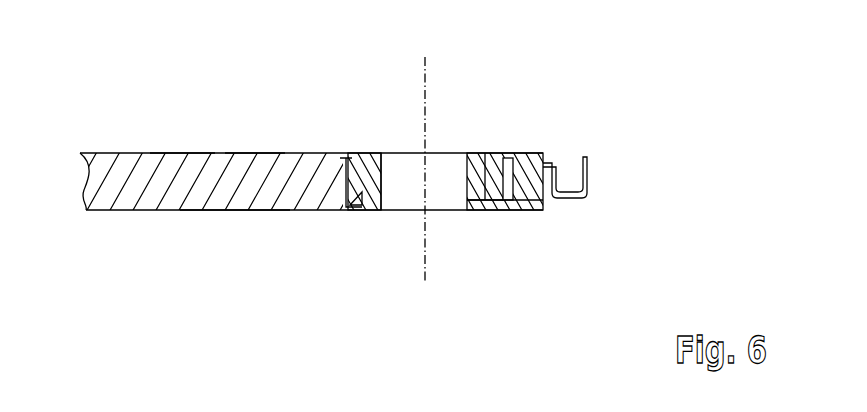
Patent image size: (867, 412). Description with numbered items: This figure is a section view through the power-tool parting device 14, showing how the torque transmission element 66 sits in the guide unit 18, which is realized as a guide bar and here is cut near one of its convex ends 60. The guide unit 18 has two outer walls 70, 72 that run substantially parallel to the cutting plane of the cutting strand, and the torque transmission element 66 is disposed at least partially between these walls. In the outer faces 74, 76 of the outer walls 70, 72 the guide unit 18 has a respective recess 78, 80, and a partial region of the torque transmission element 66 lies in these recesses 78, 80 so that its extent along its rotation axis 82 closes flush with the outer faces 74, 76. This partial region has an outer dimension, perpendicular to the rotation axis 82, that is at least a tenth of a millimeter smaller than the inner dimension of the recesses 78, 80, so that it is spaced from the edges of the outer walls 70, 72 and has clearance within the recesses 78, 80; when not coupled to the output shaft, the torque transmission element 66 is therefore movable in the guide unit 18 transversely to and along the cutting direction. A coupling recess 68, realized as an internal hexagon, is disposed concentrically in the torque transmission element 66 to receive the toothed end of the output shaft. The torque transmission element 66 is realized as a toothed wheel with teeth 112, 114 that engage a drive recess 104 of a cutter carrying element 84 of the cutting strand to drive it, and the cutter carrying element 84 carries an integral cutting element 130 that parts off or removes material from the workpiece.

The power-tool parting device 14 is at (575, 82).
The guide unit 18 is at (110, 205).
The convex end 60 is at (603, 240).
The torque transmission element 66 is at (371, 210).
The coupling recess 68 is at (445, 192).
The outer wall 70 is at (215, 212).
The outer wall 72 is at (178, 152).
The outer face 74 is at (265, 211).
The outer face 76 is at (260, 146).
The recess 78 is at (365, 210).
The recess 80 is at (366, 153).
The rotation axis 82 is at (425, 70).
The cutter carrying element 84 is at (532, 210).
The drive recess 104 is at (511, 153).
The tooth 112 is at (345, 209).
The tooth 114 is at (480, 207).
The cutting element 130 is at (587, 183).